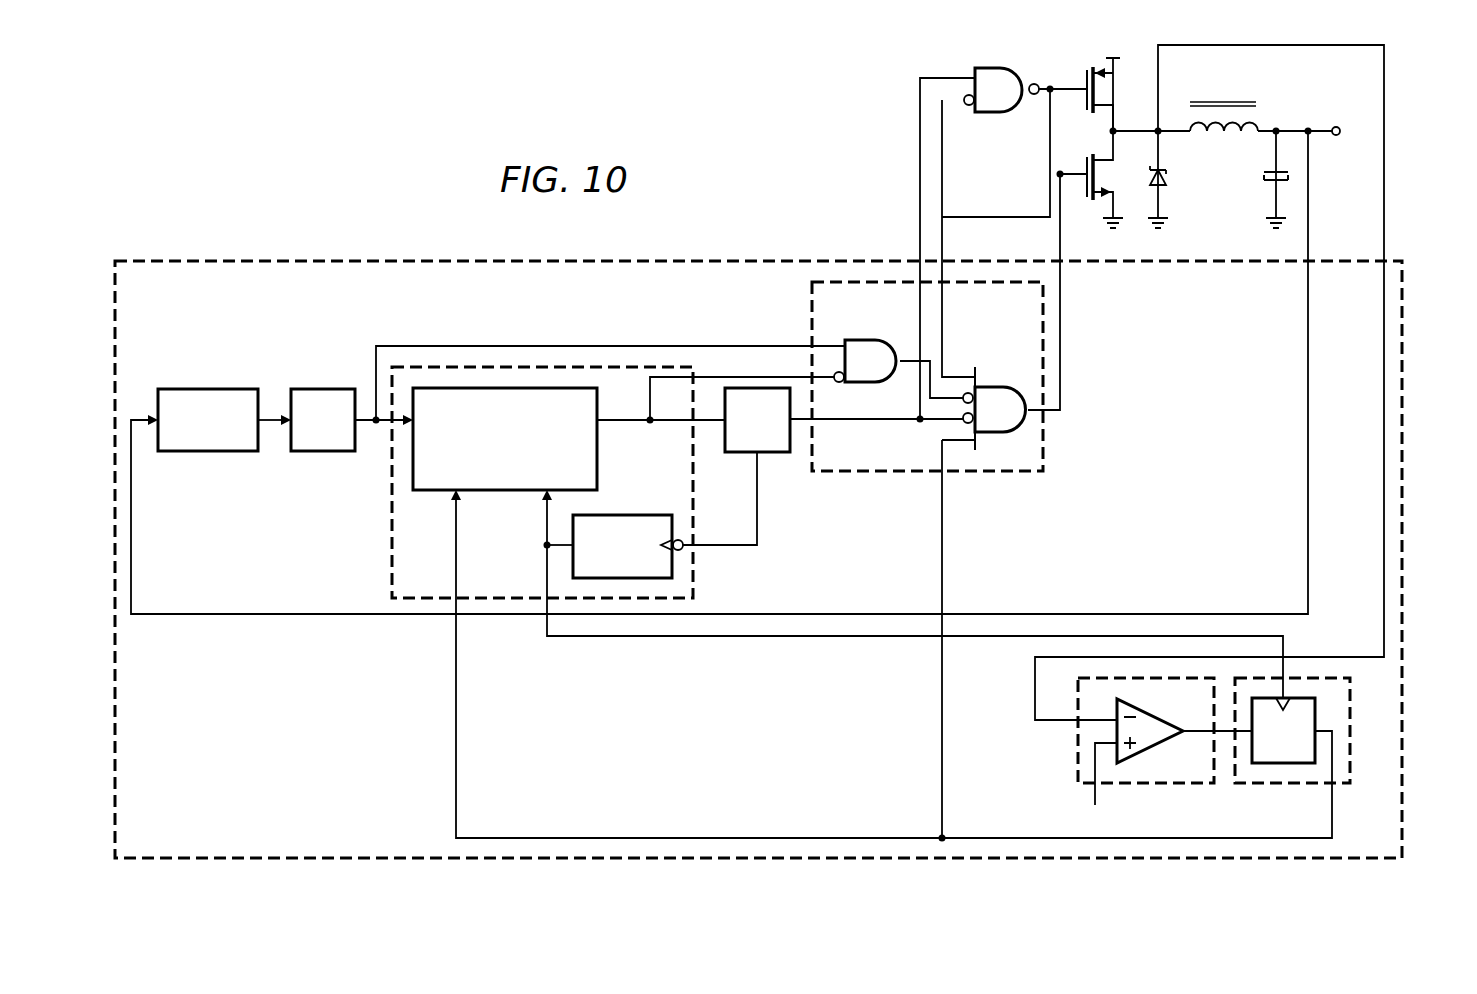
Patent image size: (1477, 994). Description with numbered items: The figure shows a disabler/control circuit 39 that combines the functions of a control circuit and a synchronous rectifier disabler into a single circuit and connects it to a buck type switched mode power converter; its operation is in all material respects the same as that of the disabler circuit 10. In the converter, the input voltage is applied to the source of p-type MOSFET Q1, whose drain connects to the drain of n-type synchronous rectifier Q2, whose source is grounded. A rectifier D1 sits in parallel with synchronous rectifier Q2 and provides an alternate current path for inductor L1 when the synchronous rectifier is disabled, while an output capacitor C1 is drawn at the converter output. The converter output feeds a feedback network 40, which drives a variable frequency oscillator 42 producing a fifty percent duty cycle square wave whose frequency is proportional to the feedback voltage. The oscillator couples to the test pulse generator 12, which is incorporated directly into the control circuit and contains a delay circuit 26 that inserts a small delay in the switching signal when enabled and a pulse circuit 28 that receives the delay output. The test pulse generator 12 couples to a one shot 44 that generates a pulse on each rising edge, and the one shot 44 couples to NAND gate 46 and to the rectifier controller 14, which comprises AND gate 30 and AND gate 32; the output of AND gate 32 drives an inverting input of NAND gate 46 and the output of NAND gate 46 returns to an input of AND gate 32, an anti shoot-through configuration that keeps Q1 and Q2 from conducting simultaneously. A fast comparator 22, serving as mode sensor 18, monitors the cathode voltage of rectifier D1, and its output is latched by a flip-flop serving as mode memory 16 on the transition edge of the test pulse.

The disabler circuit 10 is at (1166, 501).
The disabler/control circuit 39 is at (257, 261).
The rectifier controller 14 is at (812, 312).
The test pulse generator 12 is at (392, 540).
The feedback network 40 is at (196, 389).
The variable frequency oscillator 42 is at (323, 389).
The delay circuit 26 is at (597, 440).
The pulse circuit 28 is at (630, 515).
The one shot 44 is at (770, 452).
The AND gate 30 is at (870, 340).
The AND gate 32 is at (1003, 387).
The NAND gate 46 is at (985, 112).
The mode sensor 18 is at (1078, 740).
The fast comparator 22 is at (1160, 745).
The mode memory 16 is at (1262, 783).
The p-type MOSFET Q1 is at (1115, 99).
The synchronous rectifier Q2 is at (1115, 179).
The inductor L1 is at (1224, 99).
The rectifier D1 is at (1171, 196).
The capacitor C1 is at (1262, 196).